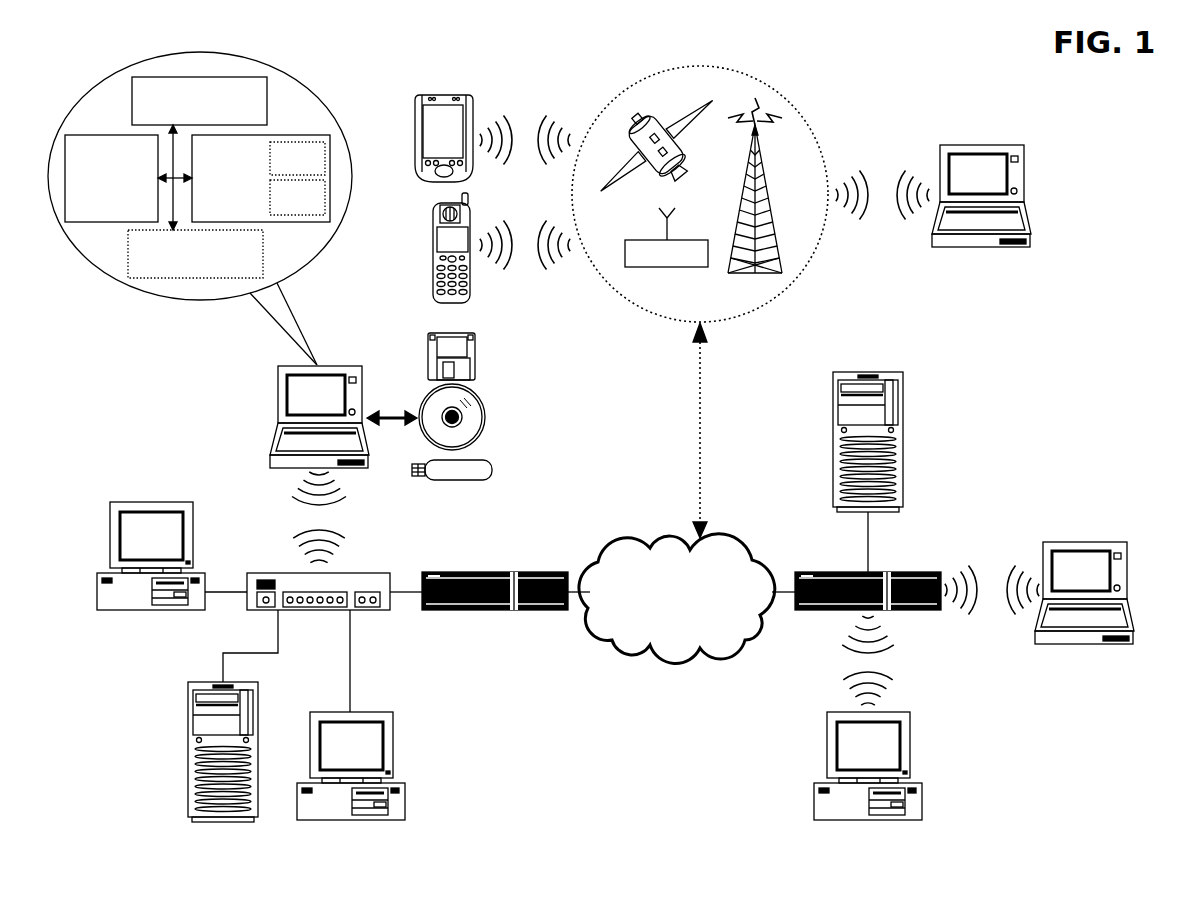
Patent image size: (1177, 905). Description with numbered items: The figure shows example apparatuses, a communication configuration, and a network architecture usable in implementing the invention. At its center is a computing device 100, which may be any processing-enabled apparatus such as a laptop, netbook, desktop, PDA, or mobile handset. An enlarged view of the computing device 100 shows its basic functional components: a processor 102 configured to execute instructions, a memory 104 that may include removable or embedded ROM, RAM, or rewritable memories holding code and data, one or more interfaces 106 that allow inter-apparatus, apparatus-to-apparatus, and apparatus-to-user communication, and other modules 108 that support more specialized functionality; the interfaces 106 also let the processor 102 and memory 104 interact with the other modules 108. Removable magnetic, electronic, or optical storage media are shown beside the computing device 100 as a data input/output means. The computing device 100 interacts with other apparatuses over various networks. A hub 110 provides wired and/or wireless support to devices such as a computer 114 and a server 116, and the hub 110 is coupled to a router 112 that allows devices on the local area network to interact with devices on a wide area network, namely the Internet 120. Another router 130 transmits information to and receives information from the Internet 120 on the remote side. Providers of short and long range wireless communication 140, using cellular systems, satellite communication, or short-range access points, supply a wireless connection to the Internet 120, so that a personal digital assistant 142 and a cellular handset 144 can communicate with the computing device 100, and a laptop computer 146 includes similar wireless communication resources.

The computing device 100 is at (276, 395).
The processor 102 is at (111, 178).
The memory 104 is at (261, 178).
The interfaces 106 is at (199, 101).
The other modules 108 is at (195, 254).
The hub 110 is at (365, 572).
The router 112 is at (540, 572).
The computer 114 is at (100, 572).
The server 116 is at (187, 748).
The Internet 120 is at (615, 648).
The router 130 is at (903, 572).
The wireless communication 140 is at (824, 140).
The personal digital assistant (PDA) 142 is at (413, 135).
The cellular handset 144 is at (430, 246).
The laptop computer 146 is at (1025, 172).